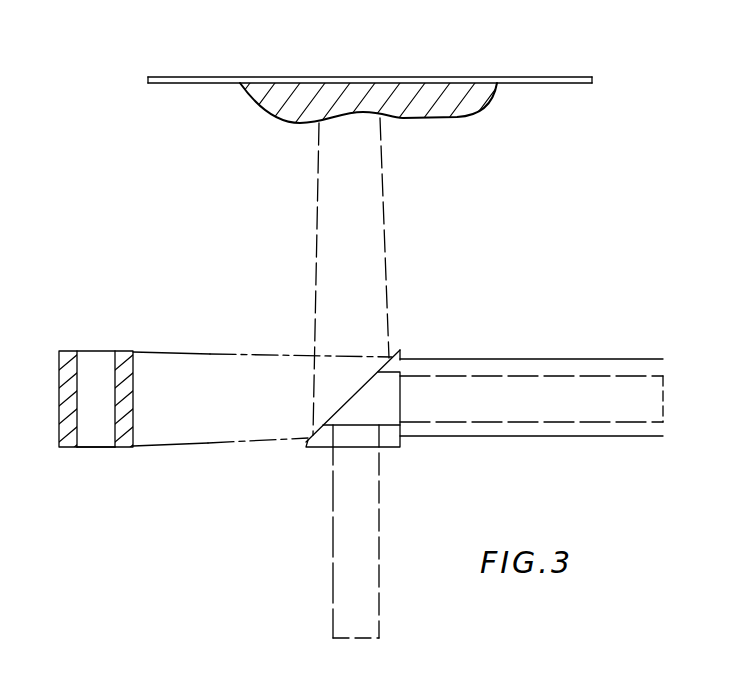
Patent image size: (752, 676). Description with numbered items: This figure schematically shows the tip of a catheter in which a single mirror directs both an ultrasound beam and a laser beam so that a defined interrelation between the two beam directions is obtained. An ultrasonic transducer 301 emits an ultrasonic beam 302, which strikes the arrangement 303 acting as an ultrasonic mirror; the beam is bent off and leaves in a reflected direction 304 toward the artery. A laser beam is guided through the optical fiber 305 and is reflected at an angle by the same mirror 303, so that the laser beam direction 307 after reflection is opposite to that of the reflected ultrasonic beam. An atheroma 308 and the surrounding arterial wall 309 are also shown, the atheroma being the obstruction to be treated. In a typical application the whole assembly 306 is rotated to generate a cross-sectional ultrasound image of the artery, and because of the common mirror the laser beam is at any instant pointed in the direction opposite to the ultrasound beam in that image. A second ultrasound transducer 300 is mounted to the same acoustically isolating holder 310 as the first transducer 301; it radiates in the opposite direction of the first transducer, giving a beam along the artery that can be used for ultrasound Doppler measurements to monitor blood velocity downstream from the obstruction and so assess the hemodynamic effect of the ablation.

The second ultrasound transducer 300 is at (58, 430).
The ultrasonic transducer 301 is at (132, 352).
The ultrasonic beam 302 is at (283, 352).
The mirror arrangement 303 is at (352, 427).
The reflected ultrasound beam direction 304 is at (389, 262).
The optical fiber 305 is at (623, 422).
The assembly 306 is at (607, 376).
The laser beam direction 307 is at (379, 530).
The atheroma 308 is at (470, 111).
The arterial wall 309 is at (558, 61).
The acoustically isolating holder 310 is at (110, 448).